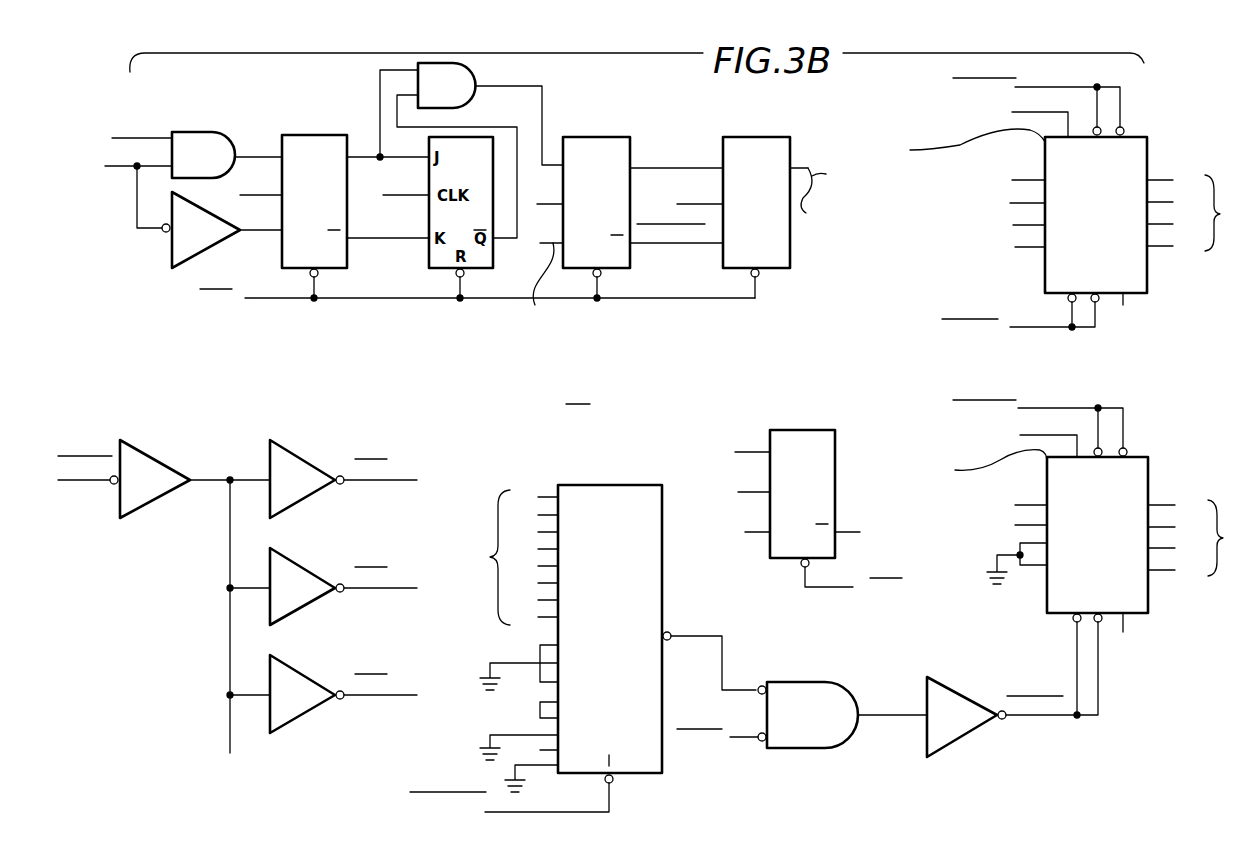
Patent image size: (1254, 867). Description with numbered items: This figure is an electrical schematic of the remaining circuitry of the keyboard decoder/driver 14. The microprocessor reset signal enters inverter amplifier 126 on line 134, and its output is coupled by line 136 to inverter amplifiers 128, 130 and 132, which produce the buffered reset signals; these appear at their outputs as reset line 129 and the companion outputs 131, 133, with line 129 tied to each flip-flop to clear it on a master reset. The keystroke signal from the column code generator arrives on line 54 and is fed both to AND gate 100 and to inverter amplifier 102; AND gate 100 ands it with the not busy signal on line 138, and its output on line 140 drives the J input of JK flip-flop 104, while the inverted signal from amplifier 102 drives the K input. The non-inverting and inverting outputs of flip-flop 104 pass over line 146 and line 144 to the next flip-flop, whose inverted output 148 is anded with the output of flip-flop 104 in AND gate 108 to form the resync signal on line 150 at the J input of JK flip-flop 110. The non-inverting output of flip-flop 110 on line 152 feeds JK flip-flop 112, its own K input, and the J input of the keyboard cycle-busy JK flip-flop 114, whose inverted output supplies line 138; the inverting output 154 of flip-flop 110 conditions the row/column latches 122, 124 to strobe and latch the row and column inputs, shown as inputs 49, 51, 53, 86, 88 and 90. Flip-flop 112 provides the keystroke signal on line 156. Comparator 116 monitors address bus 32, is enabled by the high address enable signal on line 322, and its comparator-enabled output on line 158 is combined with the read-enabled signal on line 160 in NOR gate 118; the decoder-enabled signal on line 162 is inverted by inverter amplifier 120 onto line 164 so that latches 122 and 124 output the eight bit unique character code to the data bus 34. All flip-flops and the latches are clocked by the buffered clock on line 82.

The decoder/driver 14 is at (578, 394).
The address bus 32 is at (509, 558).
The data bus 34 is at (1197, 376).
The column count line CC0 49 is at (1030, 179).
The column count line CC1 51 is at (1020, 202).
The row/column count lines CC2, RC0 53 is at (1030, 250).
The line 54 is at (124, 170).
The line 82 is at (268, 193).
The latch input lines 86 is at (1027, 294).
The row count line RC1 88 is at (1035, 500).
The row count line RC2 90 is at (1022, 524).
The AND gate 100 is at (210, 167).
The inverter amplifier 102 is at (210, 241).
The JK flip-flop 104 is at (300, 135).
The AND gate 108 is at (458, 97).
The JK flip-flop 110 is at (600, 137).
The JK flip-flop 112 is at (738, 137).
The JK flip-flop 114 is at (800, 430).
The comparator 116 is at (632, 571).
The NOR gate 118 is at (823, 726).
The inverter amplifier 120 is at (965, 726).
The row/column latch 122 is at (1150, 145).
The row/column latch 124 is at (1150, 478).
The inverter amplifier 126 is at (158, 492).
The inverter amplifier 128 is at (308, 492).
The reset line 129 is at (266, 300).
The inverter amplifier 130 is at (308, 600).
The RS2 reset line 131 is at (384, 591).
The inverter amplifier 132 is at (308, 707).
The RS3 reset line 133 is at (381, 698).
The line 134 is at (80, 483).
The line 136 is at (1123, 305).
The line 138 is at (128, 136).
The line 140 is at (246, 152).
The line 144 is at (384, 241).
The line 146 is at (360, 152).
The flip-flop Q-bar output line 148 is at (508, 243).
The line 150 is at (545, 102).
The line 152 is at (546, 243).
The inverting output 154 is at (688, 246).
The line 156 is at (858, 200).
The line 158 is at (722, 652).
The line 160 is at (745, 740).
The line 162 is at (746, 530).
The line 164 is at (1042, 330).
The line 322 is at (612, 806).